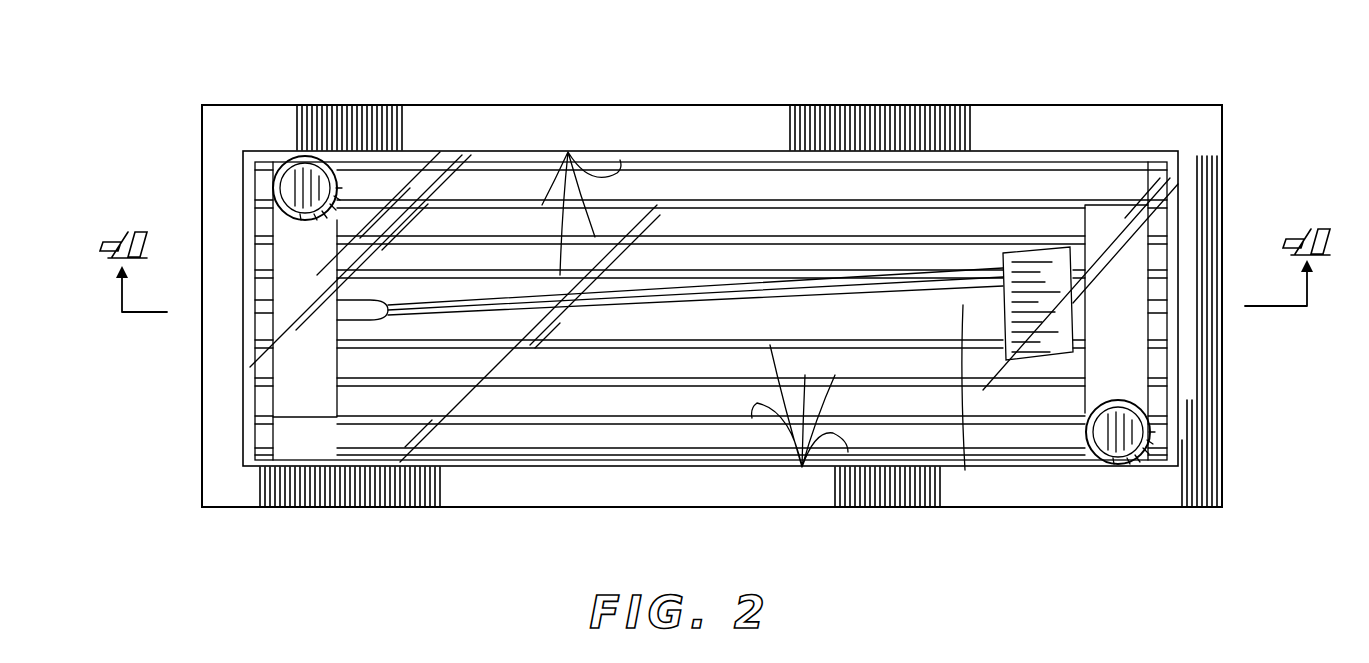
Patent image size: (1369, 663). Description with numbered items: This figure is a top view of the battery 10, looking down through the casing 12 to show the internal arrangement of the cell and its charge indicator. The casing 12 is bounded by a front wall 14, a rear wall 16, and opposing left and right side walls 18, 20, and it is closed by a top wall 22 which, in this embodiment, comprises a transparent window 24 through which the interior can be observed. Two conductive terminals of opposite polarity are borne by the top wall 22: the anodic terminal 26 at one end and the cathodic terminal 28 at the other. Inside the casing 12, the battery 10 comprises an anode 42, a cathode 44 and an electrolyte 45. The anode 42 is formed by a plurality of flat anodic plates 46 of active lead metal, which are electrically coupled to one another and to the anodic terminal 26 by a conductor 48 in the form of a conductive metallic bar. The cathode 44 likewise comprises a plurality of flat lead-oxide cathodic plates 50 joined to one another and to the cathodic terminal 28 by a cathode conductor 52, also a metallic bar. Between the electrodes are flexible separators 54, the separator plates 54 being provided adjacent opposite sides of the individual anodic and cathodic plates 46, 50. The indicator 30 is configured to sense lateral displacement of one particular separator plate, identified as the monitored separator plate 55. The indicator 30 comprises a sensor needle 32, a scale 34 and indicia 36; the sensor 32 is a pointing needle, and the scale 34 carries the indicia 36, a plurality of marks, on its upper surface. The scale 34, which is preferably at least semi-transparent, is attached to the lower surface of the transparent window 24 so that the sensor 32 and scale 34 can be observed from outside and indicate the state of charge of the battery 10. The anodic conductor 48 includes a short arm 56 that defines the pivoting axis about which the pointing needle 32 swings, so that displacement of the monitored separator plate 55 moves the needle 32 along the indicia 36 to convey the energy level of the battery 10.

The battery 10 is at (232, 70).
The casing 12 is at (1001, 96).
The front wall 14 is at (685, 488).
The rear wall 16 is at (705, 125).
The left side wall 18 is at (218, 382).
The right side wall 20 is at (1200, 168).
The top wall 22 is at (602, 462).
The transparent window 24 is at (497, 140).
The anodic terminal 26 is at (303, 185).
The cathodic terminal 28 is at (1107, 430).
The indicator 30 is at (1142, 70).
The sensor needle 32 is at (768, 292).
The scale 34 is at (1038, 362).
The indicia 36 is at (1050, 245).
The anode 42 is at (156, 142).
The cathode 44 is at (1268, 343).
The electrolyte 45 is at (648, 150).
The anodic plates 46 is at (1173, 178).
The conductor 48 is at (303, 400).
The cathodic plates 50 is at (263, 368).
The cathode conductor 52 is at (1112, 215).
The separators 54 is at (568, 152).
The monitored separator plate 55 is at (970, 403).
The short arm 56 is at (362, 312).